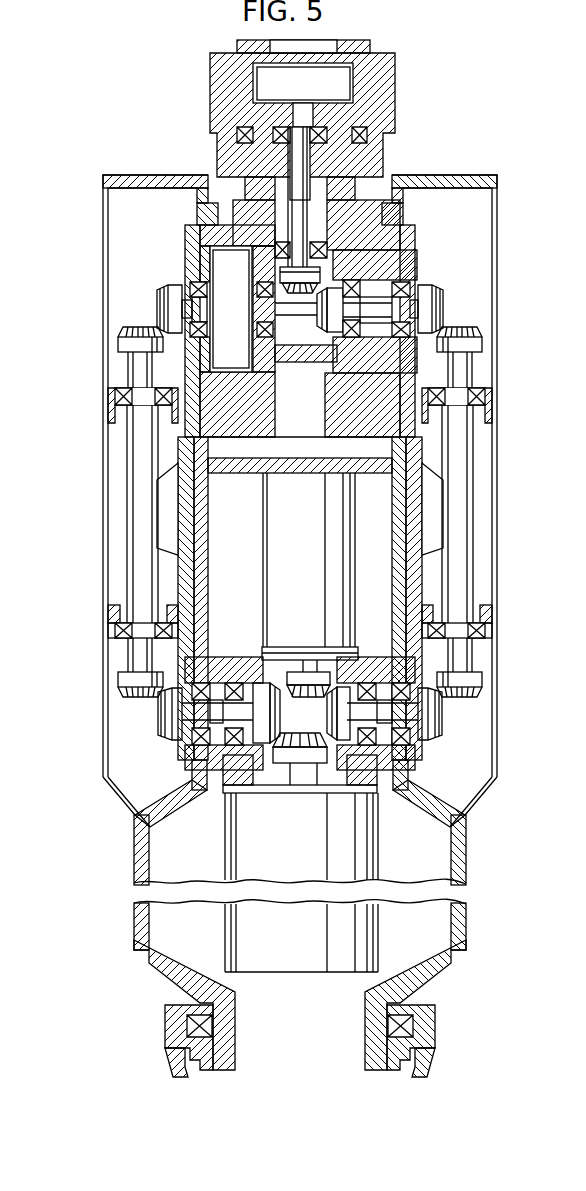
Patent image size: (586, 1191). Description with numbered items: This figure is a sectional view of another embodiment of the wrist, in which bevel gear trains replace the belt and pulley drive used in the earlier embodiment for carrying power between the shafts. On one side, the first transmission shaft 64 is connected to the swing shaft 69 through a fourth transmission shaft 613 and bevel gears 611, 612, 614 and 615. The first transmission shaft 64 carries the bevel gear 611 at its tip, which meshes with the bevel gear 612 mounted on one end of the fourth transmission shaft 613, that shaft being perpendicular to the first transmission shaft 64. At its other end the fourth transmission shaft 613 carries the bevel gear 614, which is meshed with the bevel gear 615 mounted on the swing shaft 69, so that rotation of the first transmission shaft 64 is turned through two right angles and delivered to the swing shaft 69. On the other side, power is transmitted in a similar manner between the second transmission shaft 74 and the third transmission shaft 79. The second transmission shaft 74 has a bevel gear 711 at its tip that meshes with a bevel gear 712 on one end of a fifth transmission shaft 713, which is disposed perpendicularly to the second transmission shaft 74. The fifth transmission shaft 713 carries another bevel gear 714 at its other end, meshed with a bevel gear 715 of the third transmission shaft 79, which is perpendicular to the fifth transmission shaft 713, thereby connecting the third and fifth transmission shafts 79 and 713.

The first transmission shaft 64 is at (217, 714).
The swing shaft 69 is at (192, 309).
The second transmission shaft 74 is at (410, 740).
The third transmission shaft 79 is at (372, 305).
The bevel gear 611 is at (163, 738).
The bevel gear 612 is at (130, 681).
The fourth transmission shaft 613 is at (138, 506).
The bevel gear 614 is at (132, 344).
The bevel gear 615 is at (162, 286).
The bevel gear 711 is at (436, 733).
The bevel gear 712 is at (470, 678).
The fifth transmission shaft 713 is at (457, 518).
The bevel gear 714 is at (468, 344).
The bevel gear 715 is at (434, 302).